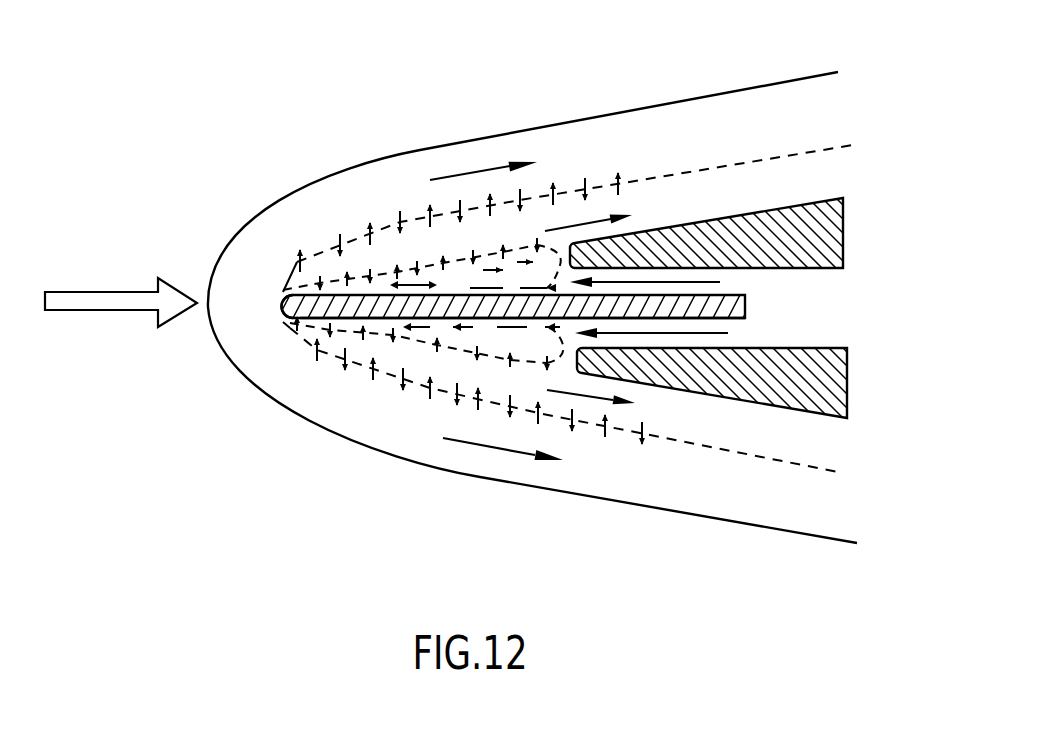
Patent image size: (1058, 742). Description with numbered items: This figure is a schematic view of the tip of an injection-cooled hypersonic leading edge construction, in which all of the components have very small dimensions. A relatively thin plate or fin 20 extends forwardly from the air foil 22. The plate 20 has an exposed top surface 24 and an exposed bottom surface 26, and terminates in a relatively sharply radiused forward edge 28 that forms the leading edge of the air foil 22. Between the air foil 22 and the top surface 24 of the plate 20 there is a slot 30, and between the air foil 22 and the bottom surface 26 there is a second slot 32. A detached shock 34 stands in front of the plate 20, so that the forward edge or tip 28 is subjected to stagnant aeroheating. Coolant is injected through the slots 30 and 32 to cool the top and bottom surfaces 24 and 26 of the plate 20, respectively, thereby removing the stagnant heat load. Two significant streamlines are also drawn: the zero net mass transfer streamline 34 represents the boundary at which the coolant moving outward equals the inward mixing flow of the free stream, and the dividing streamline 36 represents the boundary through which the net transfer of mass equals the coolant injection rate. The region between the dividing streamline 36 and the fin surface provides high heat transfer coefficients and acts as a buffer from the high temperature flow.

The plate 20 is at (538, 320).
The air foil 22 is at (712, 220).
The top surface 24 is at (463, 292).
The bottom surface 26 is at (448, 320).
The forward edge 28 is at (282, 303).
The slot 30 is at (672, 283).
The slot 32 is at (665, 333).
The detached shock 34 is at (228, 242).
The dividing streamline 36 is at (343, 333).